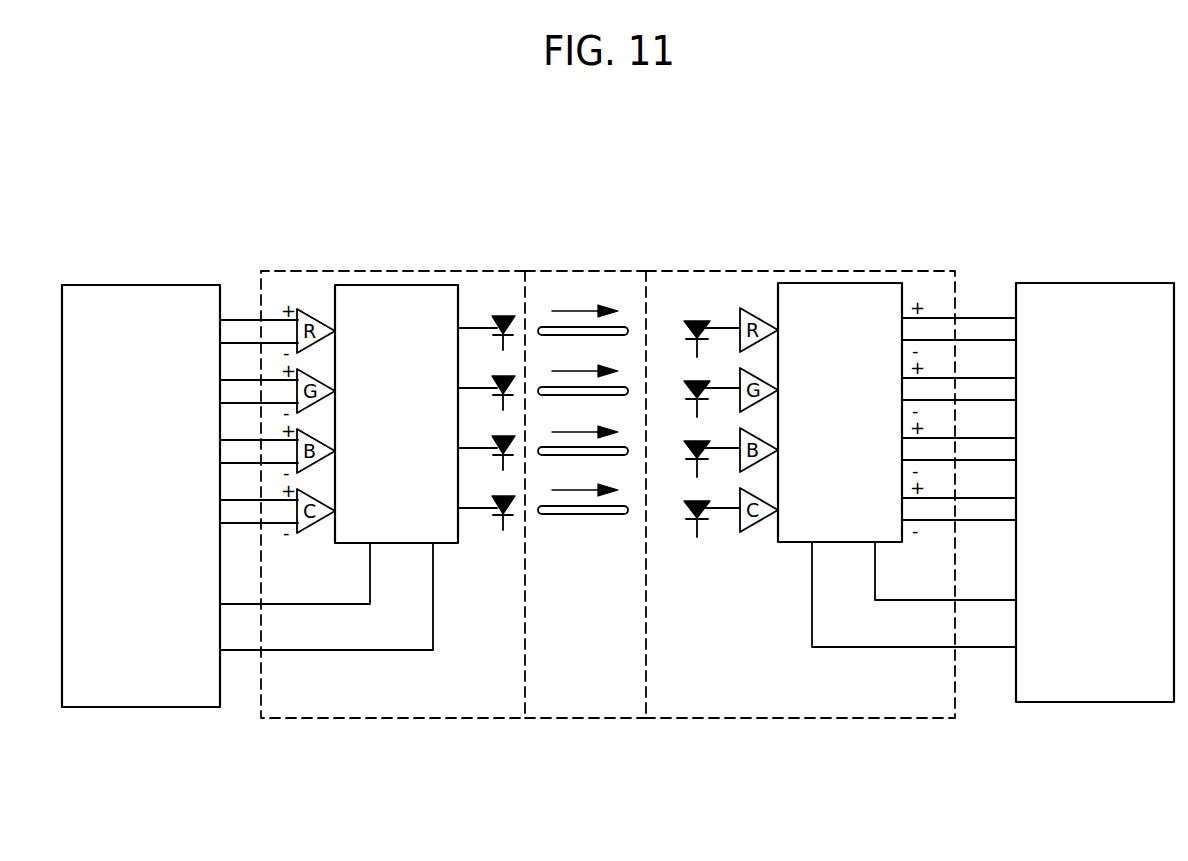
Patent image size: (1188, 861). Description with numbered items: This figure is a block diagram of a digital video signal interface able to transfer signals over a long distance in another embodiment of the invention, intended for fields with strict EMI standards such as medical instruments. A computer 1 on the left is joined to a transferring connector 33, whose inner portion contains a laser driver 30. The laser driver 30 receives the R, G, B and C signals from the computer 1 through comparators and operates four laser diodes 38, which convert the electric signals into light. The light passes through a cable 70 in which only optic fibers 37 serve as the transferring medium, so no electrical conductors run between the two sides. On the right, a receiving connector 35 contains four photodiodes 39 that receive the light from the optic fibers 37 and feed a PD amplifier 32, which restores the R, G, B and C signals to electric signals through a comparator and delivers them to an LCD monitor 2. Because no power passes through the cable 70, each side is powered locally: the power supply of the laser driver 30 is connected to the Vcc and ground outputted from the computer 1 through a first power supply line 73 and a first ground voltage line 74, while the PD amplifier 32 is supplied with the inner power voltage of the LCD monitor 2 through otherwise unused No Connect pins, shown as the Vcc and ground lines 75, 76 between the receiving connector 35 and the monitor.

The computer 1 is at (118, 707).
The LCD monitor 2 is at (1072, 690).
The laser driver 30 is at (398, 297).
The PD amplifier 32 is at (845, 297).
The transferring connector 33 is at (308, 718).
The receiving connector 35 is at (810, 717).
The optic fibers 37 is at (566, 327).
The laser diodes 38 is at (500, 315).
The photodiodes 39 is at (697, 321).
The cable 70 is at (613, 717).
The first power supply line 73 is at (328, 604).
The first ground voltage line 74 is at (397, 650).
The Vcc power line 75 is at (863, 647).
The ground line 76 is at (912, 600).